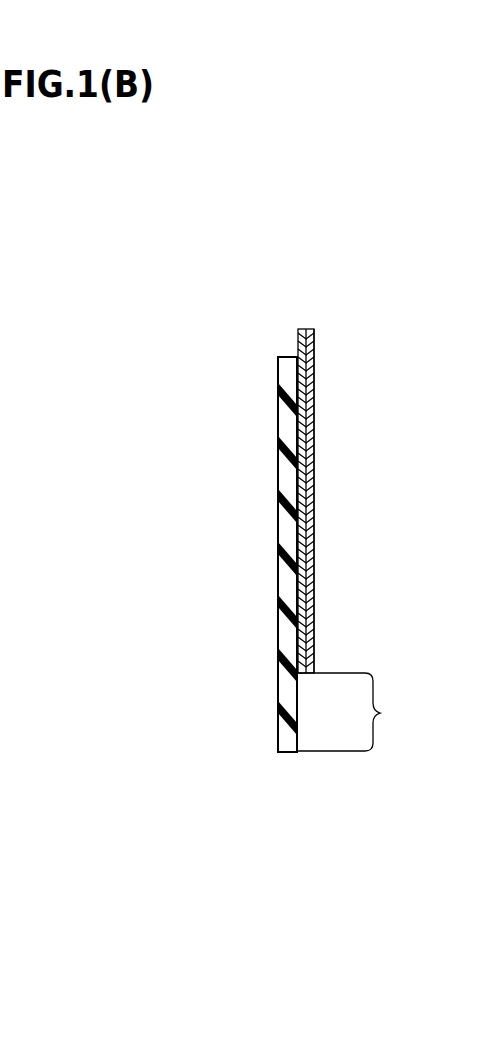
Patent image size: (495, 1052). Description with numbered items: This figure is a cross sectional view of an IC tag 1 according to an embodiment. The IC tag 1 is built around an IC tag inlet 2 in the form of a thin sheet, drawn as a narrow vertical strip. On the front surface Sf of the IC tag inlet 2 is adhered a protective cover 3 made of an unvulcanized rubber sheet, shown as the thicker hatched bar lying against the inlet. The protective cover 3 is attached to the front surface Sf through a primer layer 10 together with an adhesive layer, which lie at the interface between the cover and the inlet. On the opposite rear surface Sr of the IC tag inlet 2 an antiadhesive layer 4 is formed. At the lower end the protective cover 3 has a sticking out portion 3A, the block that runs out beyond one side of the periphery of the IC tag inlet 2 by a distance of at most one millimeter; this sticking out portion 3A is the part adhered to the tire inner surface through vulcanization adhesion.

The IC tag 1 is at (255, 308).
The IC tag inlet 2 is at (297, 330).
The protective cover 3 is at (285, 737).
The sticking out portion 3A is at (381, 712).
The antiadhesive layer 4 is at (314, 381).
The primer layer 10 is at (296, 530).
The front surface Sf is at (294, 430).
The rear surface Sr is at (310, 445).